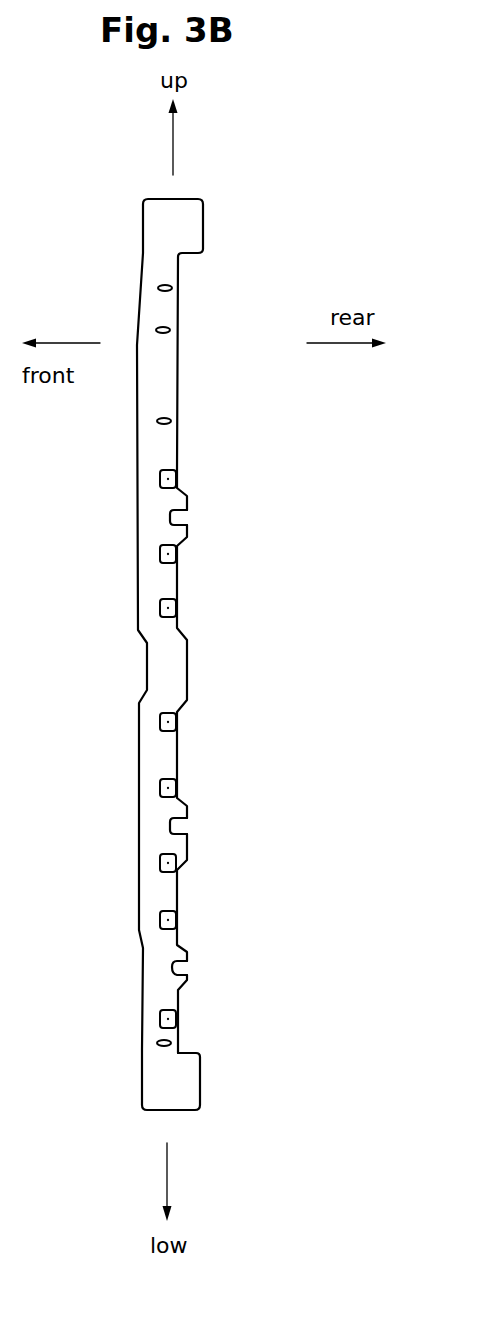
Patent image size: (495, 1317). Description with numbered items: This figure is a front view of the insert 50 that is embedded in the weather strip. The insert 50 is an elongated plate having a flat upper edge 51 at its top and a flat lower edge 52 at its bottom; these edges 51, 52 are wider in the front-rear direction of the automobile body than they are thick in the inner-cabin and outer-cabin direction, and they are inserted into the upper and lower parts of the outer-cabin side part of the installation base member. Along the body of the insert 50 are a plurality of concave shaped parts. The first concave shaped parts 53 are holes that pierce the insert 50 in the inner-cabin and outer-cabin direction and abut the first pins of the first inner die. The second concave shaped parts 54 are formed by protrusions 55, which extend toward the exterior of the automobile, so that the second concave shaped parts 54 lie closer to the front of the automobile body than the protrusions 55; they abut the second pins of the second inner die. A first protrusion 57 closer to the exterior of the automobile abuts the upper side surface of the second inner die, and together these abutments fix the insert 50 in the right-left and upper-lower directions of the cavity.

The insert 50 is at (186, 391).
The upper edge 51 is at (185, 218).
The lower edge 52 is at (182, 1083).
The first concave shaped part 53 is at (175, 517).
The second concave shaped part 54 is at (162, 480).
The protrusion 55 is at (172, 477).
The first protrusion 57 is at (172, 288).